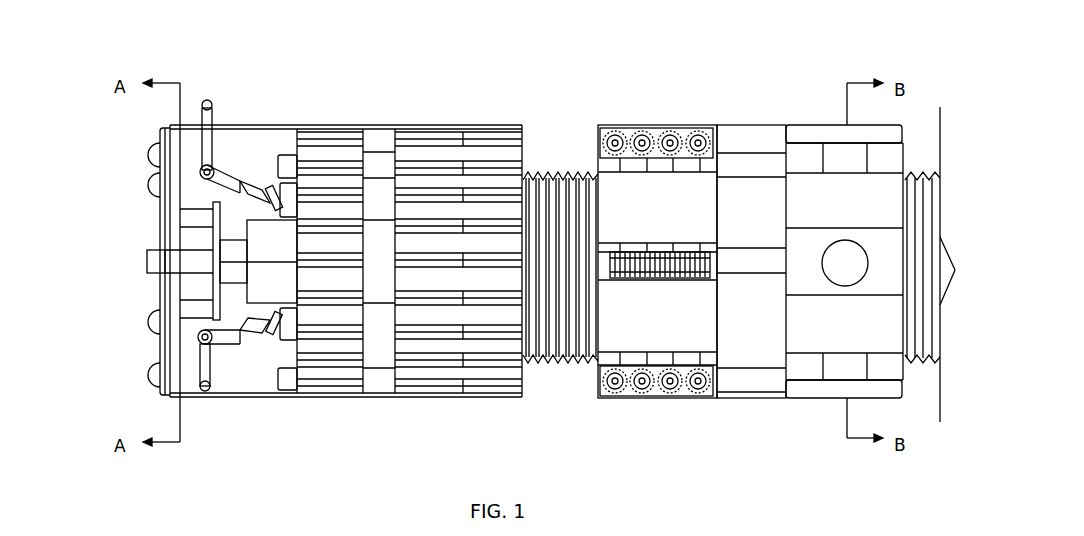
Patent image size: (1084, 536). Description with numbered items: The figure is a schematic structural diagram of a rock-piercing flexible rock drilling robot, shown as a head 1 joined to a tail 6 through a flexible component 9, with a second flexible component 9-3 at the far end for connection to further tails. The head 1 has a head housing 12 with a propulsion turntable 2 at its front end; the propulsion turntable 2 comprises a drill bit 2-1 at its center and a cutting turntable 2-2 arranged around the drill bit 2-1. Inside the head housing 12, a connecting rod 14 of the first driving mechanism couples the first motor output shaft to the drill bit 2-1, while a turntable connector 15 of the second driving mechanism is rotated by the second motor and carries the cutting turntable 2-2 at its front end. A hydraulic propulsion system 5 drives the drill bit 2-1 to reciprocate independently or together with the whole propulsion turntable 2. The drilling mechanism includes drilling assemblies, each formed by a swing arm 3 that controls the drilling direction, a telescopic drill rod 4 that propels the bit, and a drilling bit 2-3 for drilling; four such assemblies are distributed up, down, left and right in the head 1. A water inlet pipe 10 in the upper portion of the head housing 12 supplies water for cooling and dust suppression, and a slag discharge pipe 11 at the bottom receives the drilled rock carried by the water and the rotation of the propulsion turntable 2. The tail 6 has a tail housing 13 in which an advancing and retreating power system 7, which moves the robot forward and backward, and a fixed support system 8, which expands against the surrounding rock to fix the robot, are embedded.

The head 1 is at (255, 398).
The propulsion turntable 2 is at (173, 340).
The drill bit 2-1 is at (150, 262).
The cutting turntable 2-2 is at (160, 183).
The drilling bit 2-3 is at (208, 102).
The swing arm 3 is at (262, 188).
The telescopic drill rod 4 is at (205, 148).
The hydraulic propulsion system 5 is at (404, 383).
The tail 6 is at (735, 398).
The advancing and retreating power system 7 is at (645, 390).
The fixed support system 8 is at (822, 143).
The flexible component 9 is at (551, 180).
The second flexible component 9-3 is at (923, 200).
The water inlet pipe 10 is at (298, 160).
The slag discharge pipe 11 is at (290, 388).
The head housing 12 is at (380, 167).
The tail housing 13 is at (753, 143).
The connecting rod 14 is at (197, 261).
The turntable connector 15 is at (190, 314).